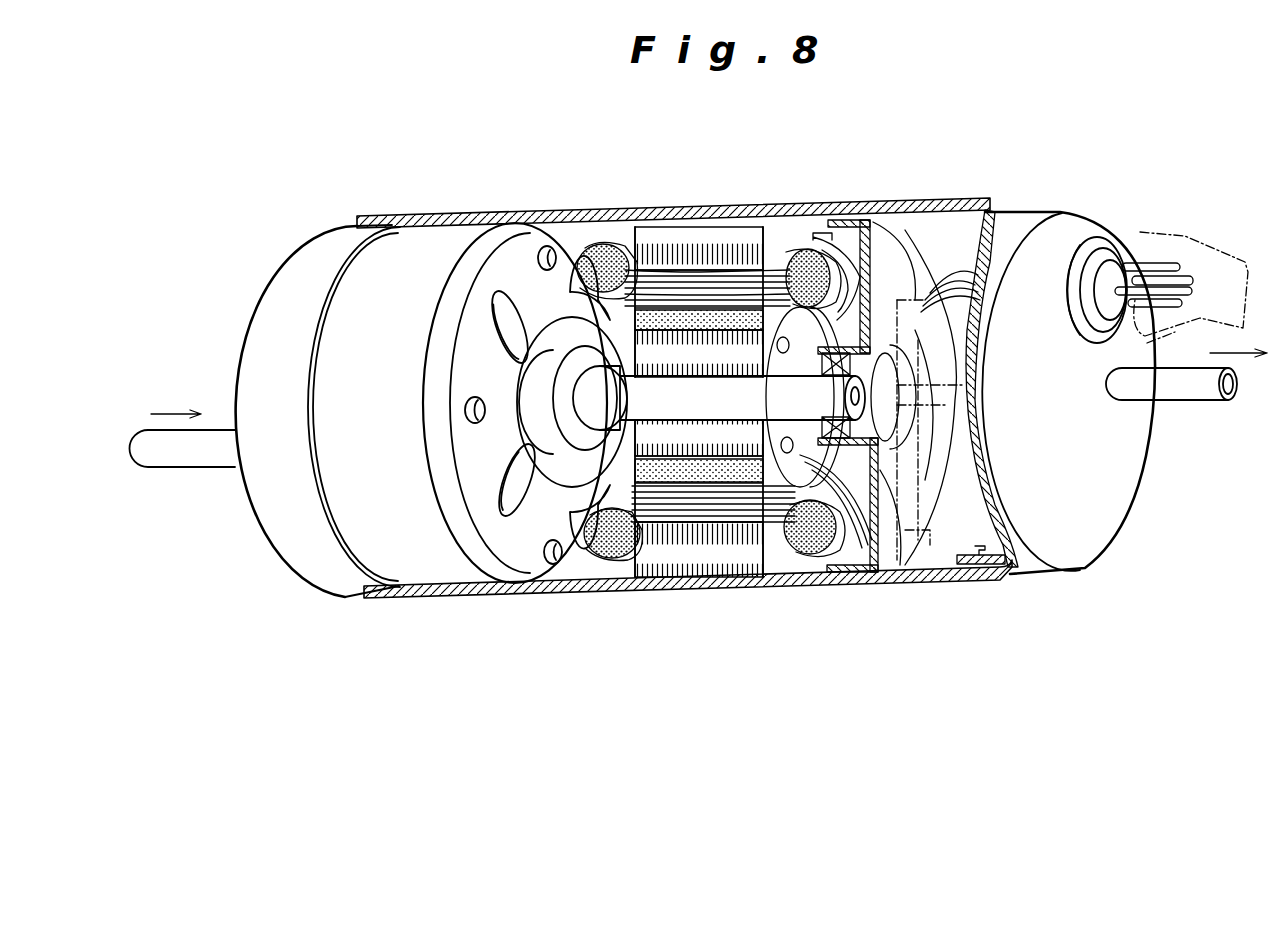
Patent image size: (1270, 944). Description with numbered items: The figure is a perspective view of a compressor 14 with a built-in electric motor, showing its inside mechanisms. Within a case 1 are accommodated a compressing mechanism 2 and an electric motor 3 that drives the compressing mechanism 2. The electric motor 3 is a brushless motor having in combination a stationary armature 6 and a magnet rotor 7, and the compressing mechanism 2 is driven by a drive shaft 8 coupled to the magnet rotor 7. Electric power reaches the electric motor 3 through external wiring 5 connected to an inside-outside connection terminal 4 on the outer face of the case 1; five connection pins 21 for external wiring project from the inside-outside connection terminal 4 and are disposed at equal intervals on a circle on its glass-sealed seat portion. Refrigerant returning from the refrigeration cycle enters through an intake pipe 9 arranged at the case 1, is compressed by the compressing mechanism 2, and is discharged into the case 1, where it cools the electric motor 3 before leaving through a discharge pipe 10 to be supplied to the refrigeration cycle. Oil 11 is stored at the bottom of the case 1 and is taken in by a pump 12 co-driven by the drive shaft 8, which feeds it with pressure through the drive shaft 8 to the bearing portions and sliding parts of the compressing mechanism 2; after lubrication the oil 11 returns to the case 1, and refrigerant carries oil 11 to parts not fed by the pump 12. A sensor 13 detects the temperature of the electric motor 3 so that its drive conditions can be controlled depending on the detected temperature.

The case 1 is at (612, 208).
The compressing mechanism 2 is at (437, 249).
The electric motor 3 is at (807, 228).
The inside-outside connection terminal 4 is at (1128, 253).
The external wiring 5 is at (1240, 260).
The stationary armature 6 is at (712, 215).
The magnet rotor 7 is at (698, 350).
The drive shaft 8 is at (717, 397).
The intake pipe 9 is at (188, 460).
The discharge pipe 10 is at (1183, 390).
The oil 11 is at (978, 585).
The pump 12 is at (970, 437).
The sensor 13 is at (850, 205).
The compressor 14 is at (962, 195).
The connection pins for external wiring 21 is at (1165, 267).